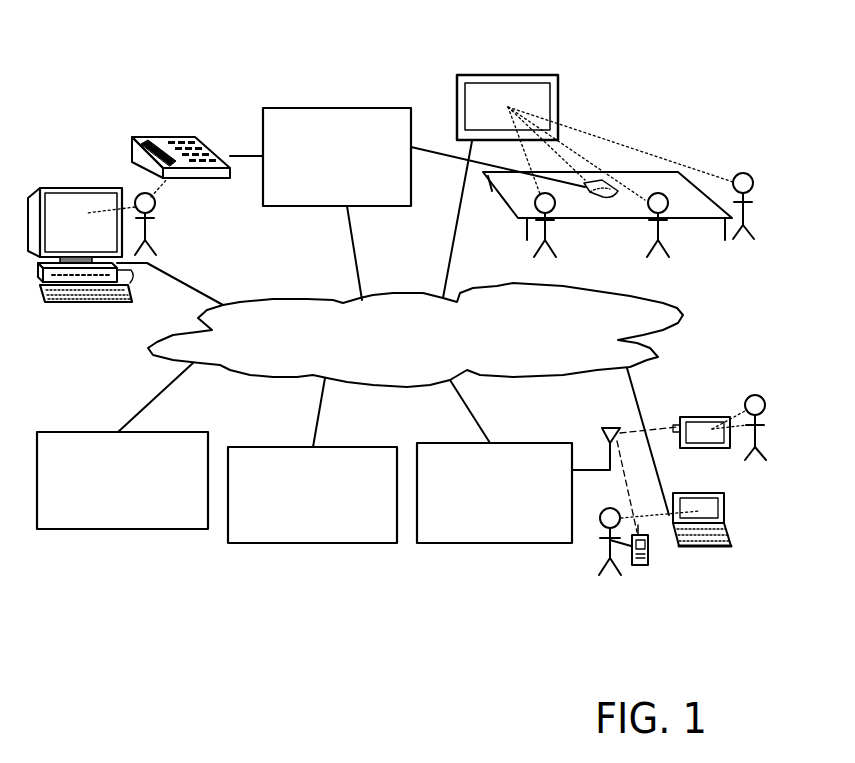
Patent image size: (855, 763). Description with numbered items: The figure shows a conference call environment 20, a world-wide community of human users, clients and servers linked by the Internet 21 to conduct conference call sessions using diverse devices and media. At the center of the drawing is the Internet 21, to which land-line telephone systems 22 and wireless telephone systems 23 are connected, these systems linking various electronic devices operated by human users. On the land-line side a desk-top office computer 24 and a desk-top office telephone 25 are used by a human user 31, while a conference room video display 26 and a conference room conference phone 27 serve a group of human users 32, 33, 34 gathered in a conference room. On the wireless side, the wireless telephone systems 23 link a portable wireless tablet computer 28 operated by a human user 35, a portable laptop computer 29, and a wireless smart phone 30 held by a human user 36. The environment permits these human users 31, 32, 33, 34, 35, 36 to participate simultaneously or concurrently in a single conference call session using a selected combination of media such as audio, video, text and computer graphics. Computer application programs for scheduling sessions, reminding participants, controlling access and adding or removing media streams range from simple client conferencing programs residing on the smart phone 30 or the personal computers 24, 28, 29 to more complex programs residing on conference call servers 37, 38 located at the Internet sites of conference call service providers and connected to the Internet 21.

The conference call environment 20 is at (672, 50).
The Internet 21 is at (672, 303).
The land-line telephone systems 22 is at (371, 108).
The wireless telephone systems 23 is at (517, 443).
The desk-top office computer 24 is at (66, 178).
The desk-top office telephone 25 is at (184, 124).
The conference room video display 26 is at (525, 75).
The conference room conference phone 27 is at (590, 183).
The portable wireless tablet computer 28 is at (687, 417).
The portable laptop computer 29 is at (717, 498).
The wireless smart phone 30 is at (649, 566).
The human user 31 is at (152, 224).
The human user 32 is at (550, 229).
The human user 33 is at (663, 229).
The human user 34 is at (748, 212).
The human user 35 is at (758, 433).
The human user 36 is at (604, 552).
The conference call server 37 is at (177, 432).
The conference call server 38 is at (352, 447).